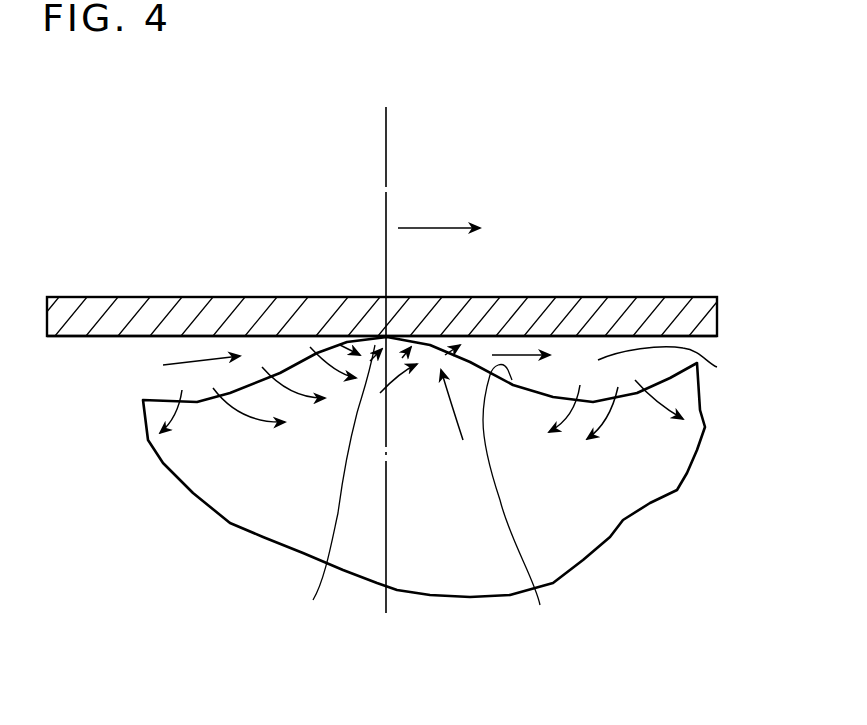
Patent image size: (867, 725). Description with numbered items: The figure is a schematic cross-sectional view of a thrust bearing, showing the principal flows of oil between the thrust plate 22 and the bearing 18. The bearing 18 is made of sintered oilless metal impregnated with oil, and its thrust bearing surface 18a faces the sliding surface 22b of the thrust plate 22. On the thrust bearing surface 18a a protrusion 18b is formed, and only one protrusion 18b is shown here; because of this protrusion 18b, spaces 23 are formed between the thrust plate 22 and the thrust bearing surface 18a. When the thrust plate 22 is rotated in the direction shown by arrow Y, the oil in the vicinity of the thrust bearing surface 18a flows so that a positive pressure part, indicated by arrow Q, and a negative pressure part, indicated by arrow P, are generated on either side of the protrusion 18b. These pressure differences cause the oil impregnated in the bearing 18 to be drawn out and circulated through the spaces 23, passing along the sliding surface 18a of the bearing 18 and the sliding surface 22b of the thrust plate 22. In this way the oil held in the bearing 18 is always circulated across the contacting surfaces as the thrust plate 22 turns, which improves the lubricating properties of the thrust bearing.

The bearing 18 is at (618, 530).
The thrust bearing surface 18a is at (526, 502).
The protrusion 18b is at (329, 491).
The thrust plate 22 is at (540, 297).
The sliding surface 22b is at (592, 336).
The space 23 is at (717, 367).
The negative pressure part P is at (430, 363).
The positive pressure part Q is at (340, 352).
The rotation direction Y is at (425, 228).